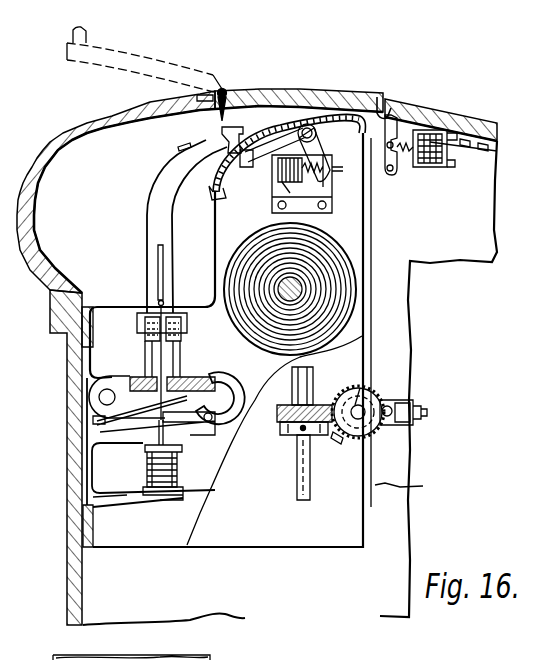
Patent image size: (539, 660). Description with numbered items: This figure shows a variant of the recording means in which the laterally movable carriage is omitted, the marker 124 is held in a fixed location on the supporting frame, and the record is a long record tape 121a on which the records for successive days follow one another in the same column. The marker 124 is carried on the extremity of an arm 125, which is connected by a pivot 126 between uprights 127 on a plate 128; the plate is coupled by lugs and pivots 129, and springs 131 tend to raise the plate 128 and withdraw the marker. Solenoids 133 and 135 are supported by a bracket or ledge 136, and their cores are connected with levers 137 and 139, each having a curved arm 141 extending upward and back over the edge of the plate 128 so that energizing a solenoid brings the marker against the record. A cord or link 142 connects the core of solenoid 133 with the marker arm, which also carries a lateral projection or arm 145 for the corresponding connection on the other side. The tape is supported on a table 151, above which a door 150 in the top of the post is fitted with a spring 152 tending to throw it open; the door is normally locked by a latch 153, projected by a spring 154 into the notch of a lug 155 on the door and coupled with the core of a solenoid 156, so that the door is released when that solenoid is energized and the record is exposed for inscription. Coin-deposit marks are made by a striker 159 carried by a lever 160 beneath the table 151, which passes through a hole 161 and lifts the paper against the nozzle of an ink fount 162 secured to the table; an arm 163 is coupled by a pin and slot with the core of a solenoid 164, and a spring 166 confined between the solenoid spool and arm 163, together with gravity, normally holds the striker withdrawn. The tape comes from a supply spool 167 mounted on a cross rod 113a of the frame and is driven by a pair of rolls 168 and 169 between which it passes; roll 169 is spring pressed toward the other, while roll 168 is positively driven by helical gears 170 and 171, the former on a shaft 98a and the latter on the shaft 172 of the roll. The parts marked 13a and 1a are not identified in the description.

The casing shell 13a is at (95, 131).
The spring 152 is at (224, 92).
The ink fount 162 is at (254, 99).
The hole 161 is at (216, 185).
The record tape 121a is at (233, 160).
The roll 169 is at (380, 398).
The arm 125 is at (158, 217).
The marker 124 is at (222, 147).
The lever 160 is at (248, 167).
The table 151 is at (309, 127).
The solenoid 164 is at (215, 163).
The spring 166 is at (303, 180).
The arm 163 is at (378, 106).
The door 150 is at (378, 96).
The latch 153 is at (398, 140).
The lug 155 is at (386, 108).
The solenoid 156 is at (434, 161).
The spring 154 is at (447, 108).
The supply spool 167 is at (252, 278).
The cross rod 113a is at (278, 297).
The lateral projection or arm 145 is at (158, 284).
The pivot 126 is at (140, 326).
The uprights 127 is at (180, 362).
The curved arm 141 is at (250, 366).
The lugs and pivots 129 is at (100, 396).
The springs 131 is at (100, 418).
The lever 139 is at (193, 428).
The bracket or ledge 136 is at (68, 514).
The casing wall 1a is at (70, 437).
The plate 128 is at (140, 425).
The solenoid 135 is at (165, 500).
The helical gear 170 is at (277, 422).
The shaft 98a is at (300, 473).
The shaft 172 is at (356, 432).
The helical gear 171 is at (340, 431).
The roll 168 is at (353, 389).
The striker 159 is at (215, 220).
The cord or link 142 is at (538, 338).
The lever 137 is at (538, 418).
The solenoid 133 is at (522, 458).